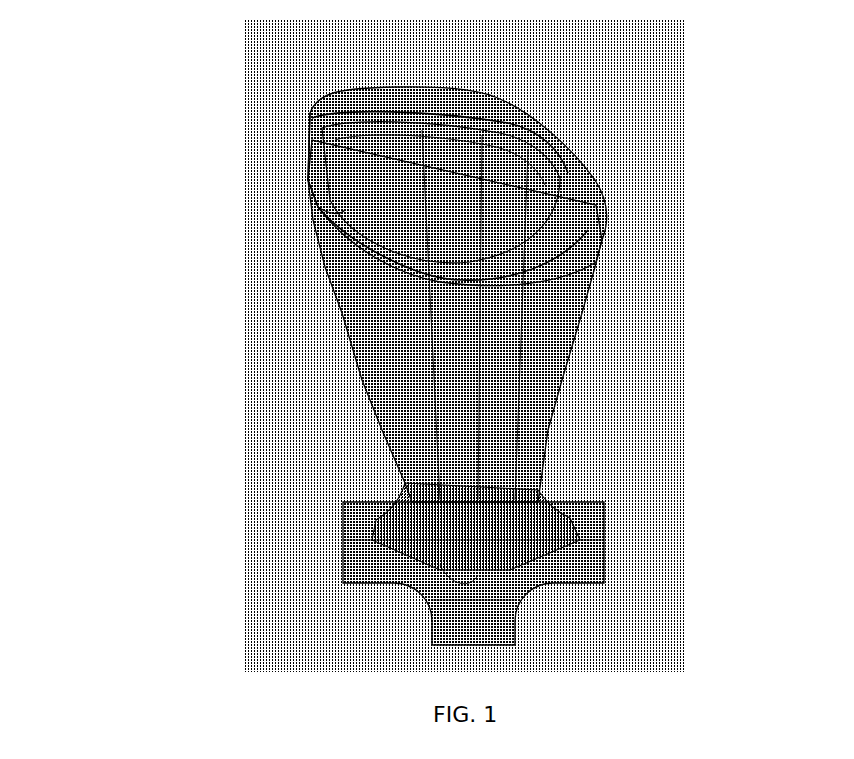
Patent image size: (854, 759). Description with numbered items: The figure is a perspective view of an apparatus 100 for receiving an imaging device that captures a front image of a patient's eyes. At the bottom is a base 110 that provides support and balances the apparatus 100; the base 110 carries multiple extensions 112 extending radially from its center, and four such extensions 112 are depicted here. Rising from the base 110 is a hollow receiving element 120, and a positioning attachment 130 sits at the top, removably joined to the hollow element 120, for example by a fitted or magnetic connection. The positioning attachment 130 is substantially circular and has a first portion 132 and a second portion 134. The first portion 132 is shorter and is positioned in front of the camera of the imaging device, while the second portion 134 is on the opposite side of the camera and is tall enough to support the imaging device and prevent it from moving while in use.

The apparatus 100 is at (385, 346).
The base 110 is at (567, 648).
The extensions 112 is at (312, 549).
The hollow receiving element 120 is at (547, 387).
The positioning attachment 130 is at (391, 160).
The first portion 132 is at (593, 158).
The second portion 134 is at (274, 154).